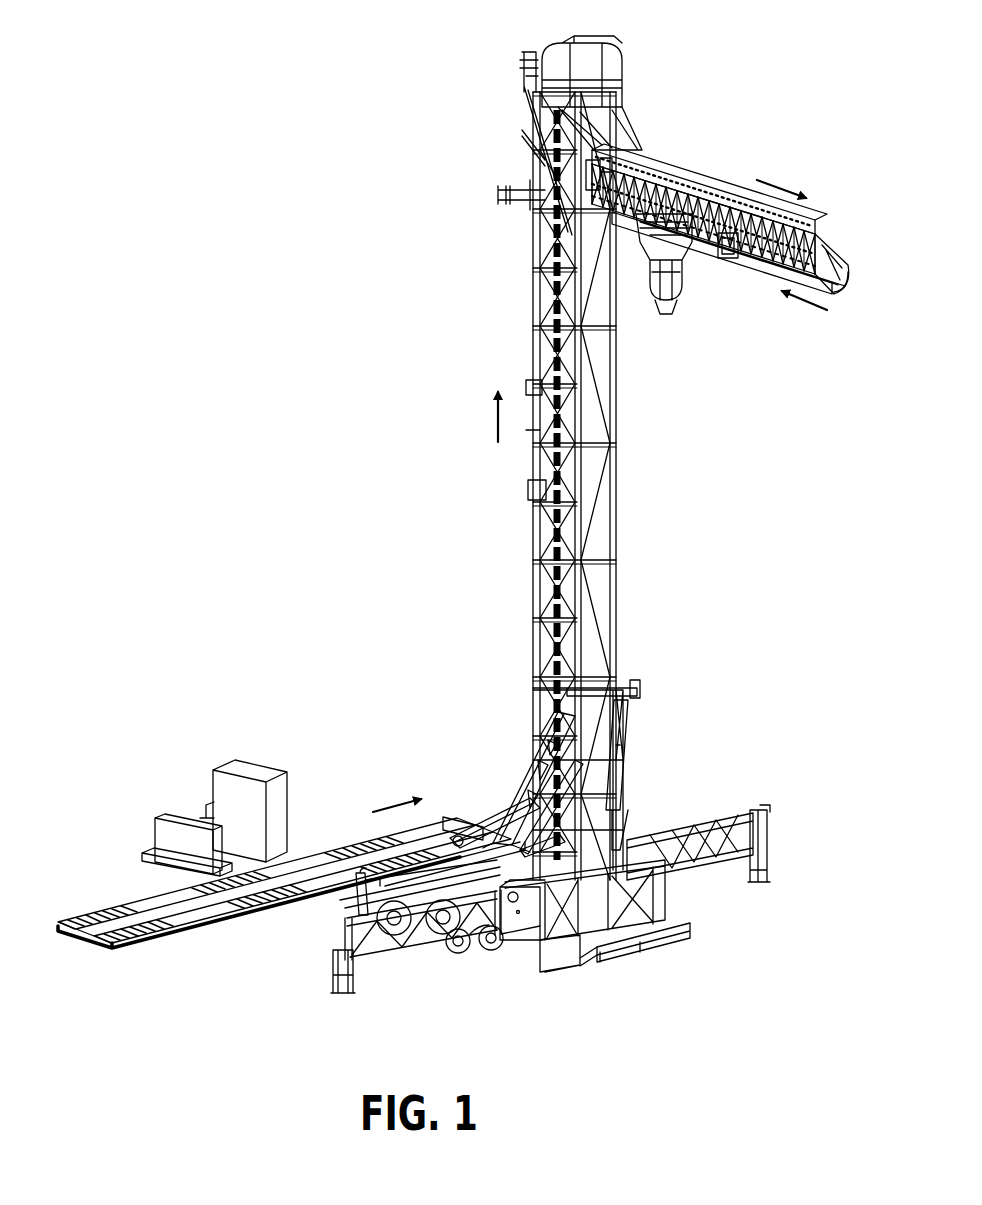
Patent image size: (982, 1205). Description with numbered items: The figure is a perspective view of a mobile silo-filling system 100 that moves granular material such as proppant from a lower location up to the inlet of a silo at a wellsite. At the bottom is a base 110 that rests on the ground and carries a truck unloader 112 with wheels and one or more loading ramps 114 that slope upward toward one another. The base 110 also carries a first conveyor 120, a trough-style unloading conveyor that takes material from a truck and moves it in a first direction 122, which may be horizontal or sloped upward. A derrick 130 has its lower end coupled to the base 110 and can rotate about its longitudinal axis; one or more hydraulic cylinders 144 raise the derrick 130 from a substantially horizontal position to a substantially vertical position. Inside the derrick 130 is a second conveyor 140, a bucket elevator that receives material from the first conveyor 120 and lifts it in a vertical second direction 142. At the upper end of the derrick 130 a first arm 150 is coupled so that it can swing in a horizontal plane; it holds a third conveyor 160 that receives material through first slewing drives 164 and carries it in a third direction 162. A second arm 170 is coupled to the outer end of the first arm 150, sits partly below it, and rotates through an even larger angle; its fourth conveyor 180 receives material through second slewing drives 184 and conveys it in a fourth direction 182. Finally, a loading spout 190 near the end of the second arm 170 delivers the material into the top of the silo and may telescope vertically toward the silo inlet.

The mobile silo-filling system 100 is at (196, 146).
The base 110 is at (324, 731).
The truck unloader 112 is at (465, 952).
The loading ramps 114 is at (207, 937).
The first conveyor 120 is at (480, 823).
The first direction 122 is at (380, 791).
The derrick 130 is at (533, 587).
The second conveyor 140 is at (533, 492).
The second direction 142 is at (496, 418).
The hydraulic cylinders 144 is at (530, 773).
The first arm 150 is at (670, 158).
The third conveyor 160 is at (720, 158).
The third direction 162 is at (783, 188).
The first slewing drives 164 is at (633, 157).
The second arm 170 is at (747, 263).
The fourth conveyor 180 is at (715, 240).
The fourth direction 182 is at (803, 303).
The second slewing drives 184 is at (818, 262).
The loading spout 190 is at (656, 305).